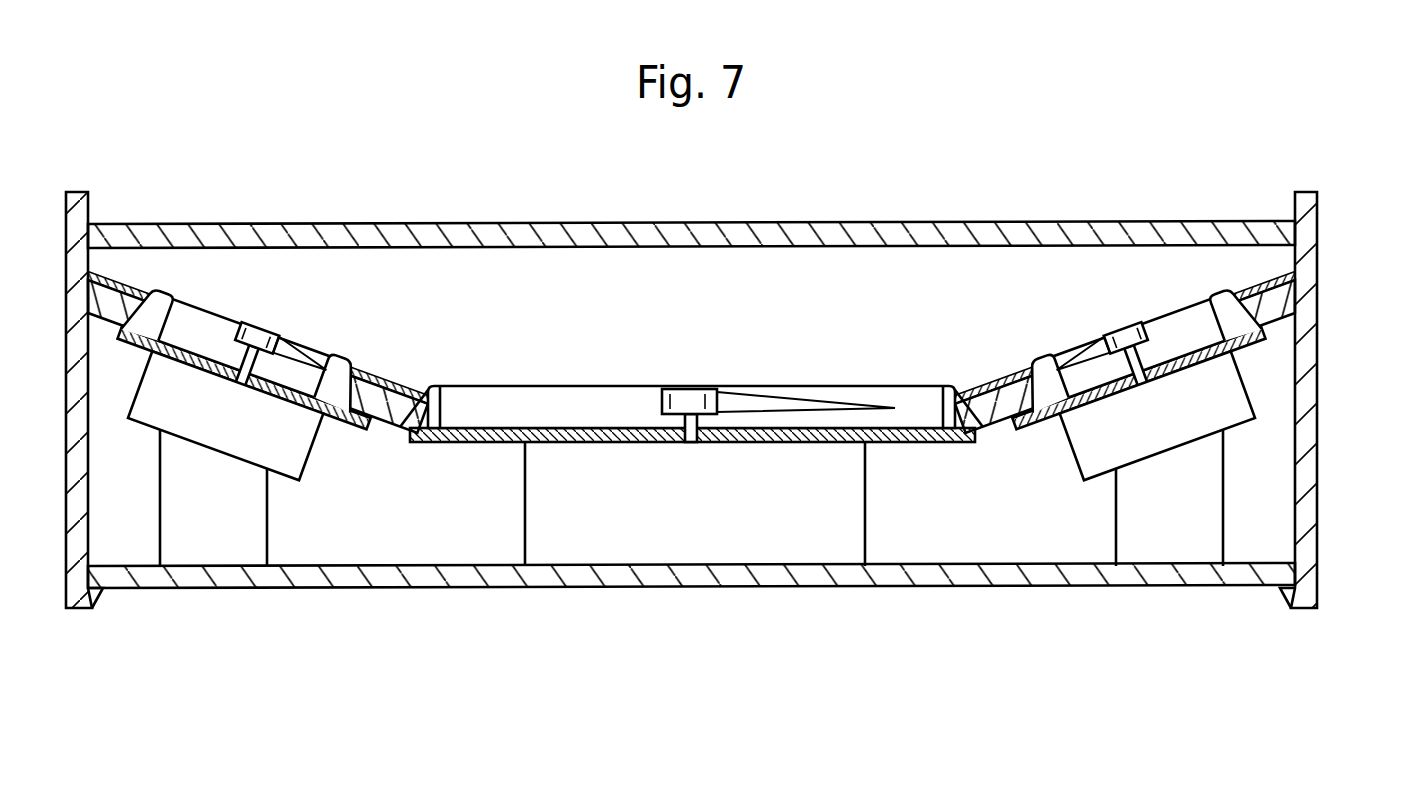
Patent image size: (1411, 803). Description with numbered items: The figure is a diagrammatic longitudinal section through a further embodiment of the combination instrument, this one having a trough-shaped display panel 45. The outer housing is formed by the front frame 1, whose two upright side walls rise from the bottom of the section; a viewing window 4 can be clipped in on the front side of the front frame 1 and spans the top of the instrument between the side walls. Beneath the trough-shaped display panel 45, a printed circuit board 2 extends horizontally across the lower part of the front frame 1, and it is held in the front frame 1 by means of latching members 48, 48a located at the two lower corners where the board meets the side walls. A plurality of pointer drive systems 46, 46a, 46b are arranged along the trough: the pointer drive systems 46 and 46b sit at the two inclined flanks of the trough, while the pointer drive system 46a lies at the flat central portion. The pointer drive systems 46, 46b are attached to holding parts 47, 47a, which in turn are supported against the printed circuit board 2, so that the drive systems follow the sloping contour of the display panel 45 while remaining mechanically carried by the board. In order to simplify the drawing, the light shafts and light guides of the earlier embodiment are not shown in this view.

The front frame 1 is at (1305, 435).
The printed circuit board 2 is at (765, 577).
The viewing window 4 is at (352, 232).
The trough-shaped display panel 45 is at (692, 433).
The pointer drive system 46 is at (278, 445).
The pointer drive system 46a is at (672, 530).
The pointer drive system 46b is at (1110, 435).
The holding part 47 is at (210, 548).
The holding part 47a is at (1193, 528).
The latching member 48 is at (84, 597).
The latching member 48a is at (1298, 596).